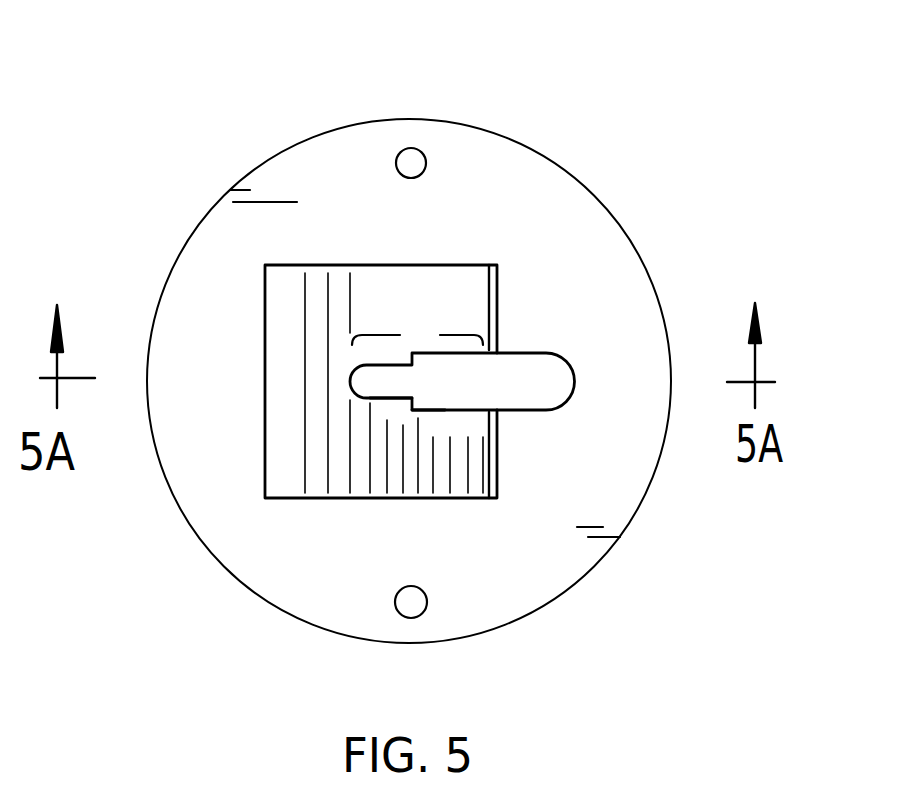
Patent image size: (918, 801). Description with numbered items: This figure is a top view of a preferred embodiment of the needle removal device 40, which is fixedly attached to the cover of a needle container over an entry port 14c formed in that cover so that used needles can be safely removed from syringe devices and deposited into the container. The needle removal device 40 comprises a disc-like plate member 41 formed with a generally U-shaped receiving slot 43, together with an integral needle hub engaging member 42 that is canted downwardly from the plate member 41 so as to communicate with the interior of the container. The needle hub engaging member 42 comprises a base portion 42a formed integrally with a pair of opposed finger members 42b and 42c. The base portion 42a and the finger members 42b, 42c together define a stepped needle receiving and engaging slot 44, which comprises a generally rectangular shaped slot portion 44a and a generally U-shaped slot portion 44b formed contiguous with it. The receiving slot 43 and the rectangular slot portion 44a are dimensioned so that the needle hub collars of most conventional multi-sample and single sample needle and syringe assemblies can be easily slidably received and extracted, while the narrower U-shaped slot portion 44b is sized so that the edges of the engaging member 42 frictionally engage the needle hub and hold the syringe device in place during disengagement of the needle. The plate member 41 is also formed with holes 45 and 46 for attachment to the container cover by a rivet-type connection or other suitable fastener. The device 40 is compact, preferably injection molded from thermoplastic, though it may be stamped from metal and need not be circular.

The needle removal device 40 is at (207, 212).
The plate member 41 is at (313, 165).
The needle hub engaging member 42 is at (417, 263).
The base portion 42a is at (290, 468).
The finger member 42b is at (455, 297).
The finger member 42c is at (450, 500).
The receiving slot 43 is at (548, 353).
The needle receiving and engaging slot 44 is at (417, 331).
The rectangular shaped slot portion 44a is at (432, 407).
The U-shaped slot portion 44b is at (367, 400).
The hole 45 is at (412, 158).
The hole 46 is at (410, 607).
The entry port 14c is at (460, 376).